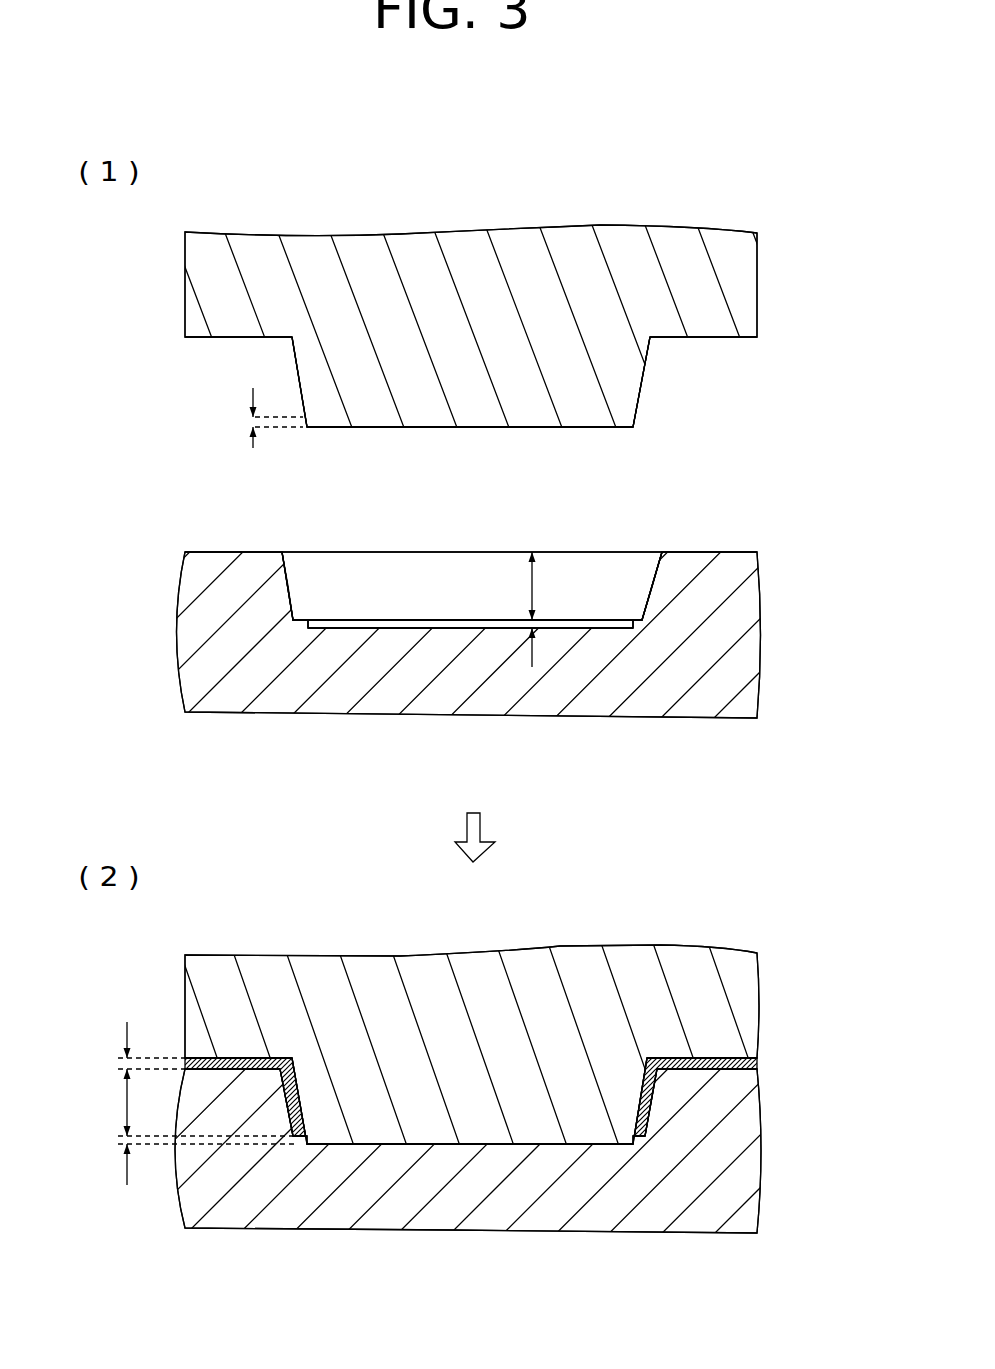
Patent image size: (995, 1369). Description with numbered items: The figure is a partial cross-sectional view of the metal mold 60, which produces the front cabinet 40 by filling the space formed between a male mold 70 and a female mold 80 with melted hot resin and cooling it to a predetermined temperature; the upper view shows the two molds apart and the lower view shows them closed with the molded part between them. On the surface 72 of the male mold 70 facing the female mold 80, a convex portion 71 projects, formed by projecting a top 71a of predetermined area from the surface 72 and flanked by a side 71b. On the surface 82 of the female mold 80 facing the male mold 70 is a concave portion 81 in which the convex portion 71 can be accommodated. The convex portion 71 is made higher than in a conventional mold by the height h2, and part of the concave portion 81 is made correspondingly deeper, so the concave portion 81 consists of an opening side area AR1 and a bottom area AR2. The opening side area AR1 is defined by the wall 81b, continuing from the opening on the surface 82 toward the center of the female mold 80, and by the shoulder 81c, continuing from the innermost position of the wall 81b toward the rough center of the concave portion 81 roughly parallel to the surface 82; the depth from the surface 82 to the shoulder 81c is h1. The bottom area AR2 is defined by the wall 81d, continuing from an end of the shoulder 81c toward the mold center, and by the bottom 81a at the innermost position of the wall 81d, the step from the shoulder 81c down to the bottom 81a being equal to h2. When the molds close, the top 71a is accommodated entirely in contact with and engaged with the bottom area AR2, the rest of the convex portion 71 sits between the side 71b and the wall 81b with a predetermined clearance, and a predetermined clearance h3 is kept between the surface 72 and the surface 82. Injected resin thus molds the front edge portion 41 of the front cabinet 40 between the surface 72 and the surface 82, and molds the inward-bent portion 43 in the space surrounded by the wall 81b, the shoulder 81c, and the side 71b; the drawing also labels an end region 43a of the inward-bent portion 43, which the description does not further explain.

The metal mold 60 is at (187, 465).
The male mold 70 is at (423, 258).
The convex portion 71 is at (323, 377).
The top 71a is at (503, 428).
The side 71b is at (295, 360).
The surface 72 is at (713, 338).
The female mold 80 is at (695, 703).
The concave portion 81 is at (295, 557).
The bottom 81a is at (468, 623).
The wall 81b is at (295, 585).
The shoulder 81c is at (303, 618).
The wall 81d is at (308, 622).
The surface 82 is at (708, 550).
The opening side area AR1 is at (433, 576).
The bottom area AR2 is at (360, 627).
The depth h1 is at (310, 844).
The height h2 is at (310, 786).
The predetermined clearance h3 is at (135, 1051).
The front cabinet 40 is at (758, 1063).
The front edge portion 41 is at (236, 1058).
The inward-bent portion 43 is at (297, 1087).
The end portion of wall 43a is at (297, 1140).